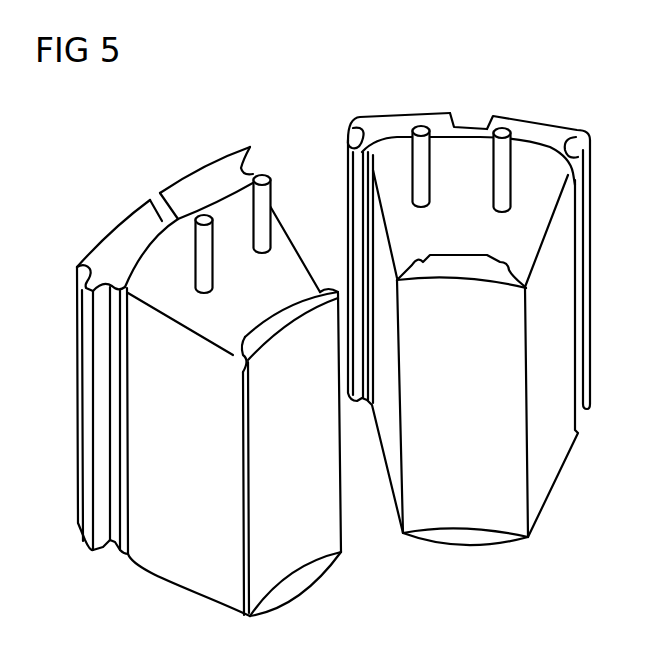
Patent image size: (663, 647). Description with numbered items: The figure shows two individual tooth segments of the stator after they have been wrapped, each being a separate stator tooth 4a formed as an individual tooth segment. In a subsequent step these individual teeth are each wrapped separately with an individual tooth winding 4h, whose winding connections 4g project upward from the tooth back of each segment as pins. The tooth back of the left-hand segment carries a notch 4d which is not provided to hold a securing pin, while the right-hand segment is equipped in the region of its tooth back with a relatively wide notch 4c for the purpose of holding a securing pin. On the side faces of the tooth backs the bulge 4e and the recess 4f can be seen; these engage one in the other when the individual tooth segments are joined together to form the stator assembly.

The stator tooth 4a is at (102, 252).
The notch 4c is at (473, 122).
The notch 4d is at (155, 197).
The bulge 4e is at (78, 266).
The recess 4f is at (254, 169).
The winding connection 4g is at (204, 214).
The individual tooth winding 4h is at (400, 240).